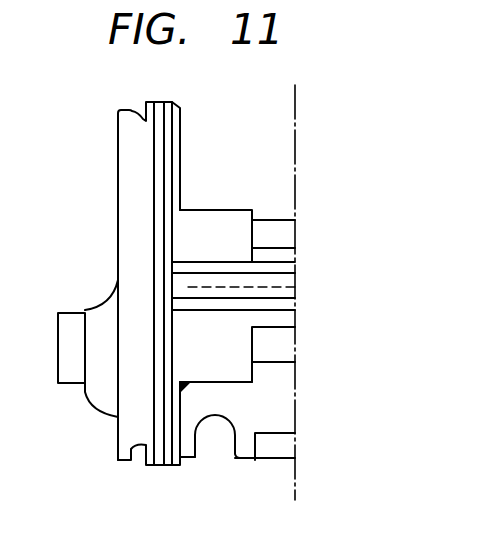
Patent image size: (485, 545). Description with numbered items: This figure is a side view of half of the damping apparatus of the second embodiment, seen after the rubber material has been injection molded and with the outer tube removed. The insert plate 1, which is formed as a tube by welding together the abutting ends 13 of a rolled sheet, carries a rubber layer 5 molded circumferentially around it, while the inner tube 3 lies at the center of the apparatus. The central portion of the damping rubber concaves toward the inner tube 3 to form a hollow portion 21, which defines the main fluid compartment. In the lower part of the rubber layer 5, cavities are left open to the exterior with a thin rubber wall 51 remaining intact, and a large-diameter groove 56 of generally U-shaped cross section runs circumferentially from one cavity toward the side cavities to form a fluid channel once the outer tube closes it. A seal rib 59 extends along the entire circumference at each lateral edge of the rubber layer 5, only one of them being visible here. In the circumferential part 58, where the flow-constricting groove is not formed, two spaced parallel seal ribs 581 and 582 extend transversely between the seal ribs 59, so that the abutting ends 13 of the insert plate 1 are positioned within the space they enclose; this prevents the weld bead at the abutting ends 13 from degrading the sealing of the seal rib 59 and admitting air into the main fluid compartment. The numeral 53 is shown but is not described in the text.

The insert plate 1 is at (125, 129).
The inner tube 3 is at (72, 325).
The rubber layer 5 is at (223, 355).
The abutting ends 13 is at (201, 287).
The hollow portion 21 is at (232, 210).
The rubber wall 51 is at (270, 382).
The housing block 53 is at (267, 437).
The large-diameter groove 56 is at (210, 423).
The circumferential part 58 is at (283, 278).
The seal rib 59 is at (177, 105).
The seal rib 581 is at (272, 260).
The seal rib 582 is at (271, 318).